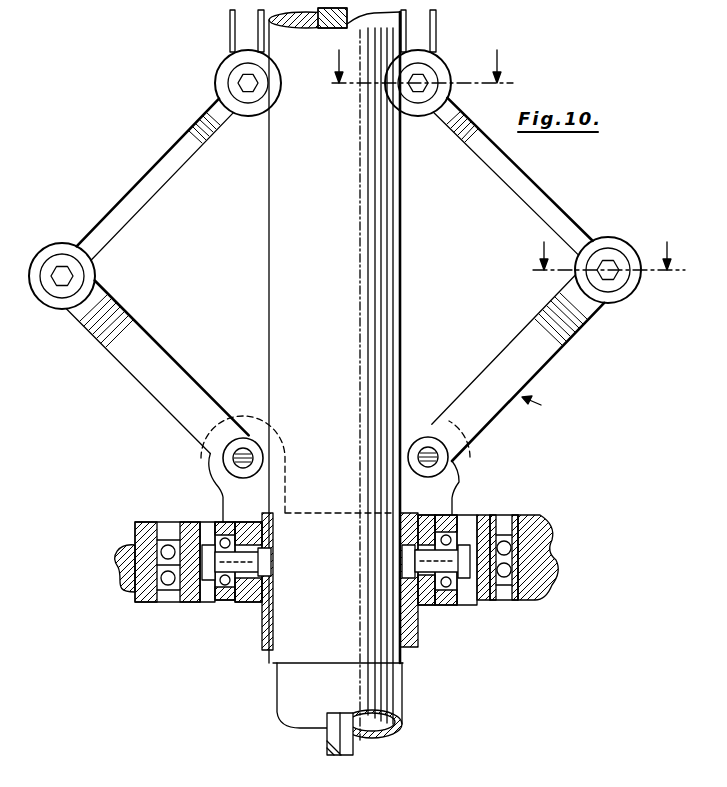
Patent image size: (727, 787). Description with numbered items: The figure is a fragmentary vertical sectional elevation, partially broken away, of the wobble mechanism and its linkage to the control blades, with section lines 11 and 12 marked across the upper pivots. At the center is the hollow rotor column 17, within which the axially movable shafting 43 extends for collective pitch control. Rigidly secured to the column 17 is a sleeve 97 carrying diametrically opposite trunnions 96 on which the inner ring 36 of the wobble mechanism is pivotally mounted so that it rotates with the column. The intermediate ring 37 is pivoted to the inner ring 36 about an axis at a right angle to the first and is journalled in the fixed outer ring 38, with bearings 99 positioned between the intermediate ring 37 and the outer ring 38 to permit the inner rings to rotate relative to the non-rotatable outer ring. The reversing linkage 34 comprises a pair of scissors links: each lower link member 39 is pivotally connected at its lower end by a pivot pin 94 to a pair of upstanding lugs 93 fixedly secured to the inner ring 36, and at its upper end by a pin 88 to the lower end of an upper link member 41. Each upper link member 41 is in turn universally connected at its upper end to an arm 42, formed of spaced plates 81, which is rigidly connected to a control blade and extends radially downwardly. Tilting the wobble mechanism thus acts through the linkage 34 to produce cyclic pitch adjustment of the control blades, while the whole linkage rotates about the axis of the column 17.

The section line 11 is at (421, 66).
The section line 12 is at (604, 257).
The column 17 is at (402, 700).
The reversing linkage 34 is at (564, 419).
The inner ring 36 is at (452, 517).
The intermediate ring 37 is at (493, 517).
The outer ring 38 is at (528, 580).
The lower link member 39 is at (146, 376).
The upper link member 41 is at (165, 165).
The arm 42 is at (233, 32).
The shafting 43 is at (325, 742).
The plates 81 is at (262, 38).
The pin 88 is at (62, 276).
The lugs 93 is at (210, 468).
The pivot pin 94 is at (244, 455).
The trunnions 96 is at (247, 572).
The sleeve 97 is at (433, 500).
The bearings 99 is at (137, 588).